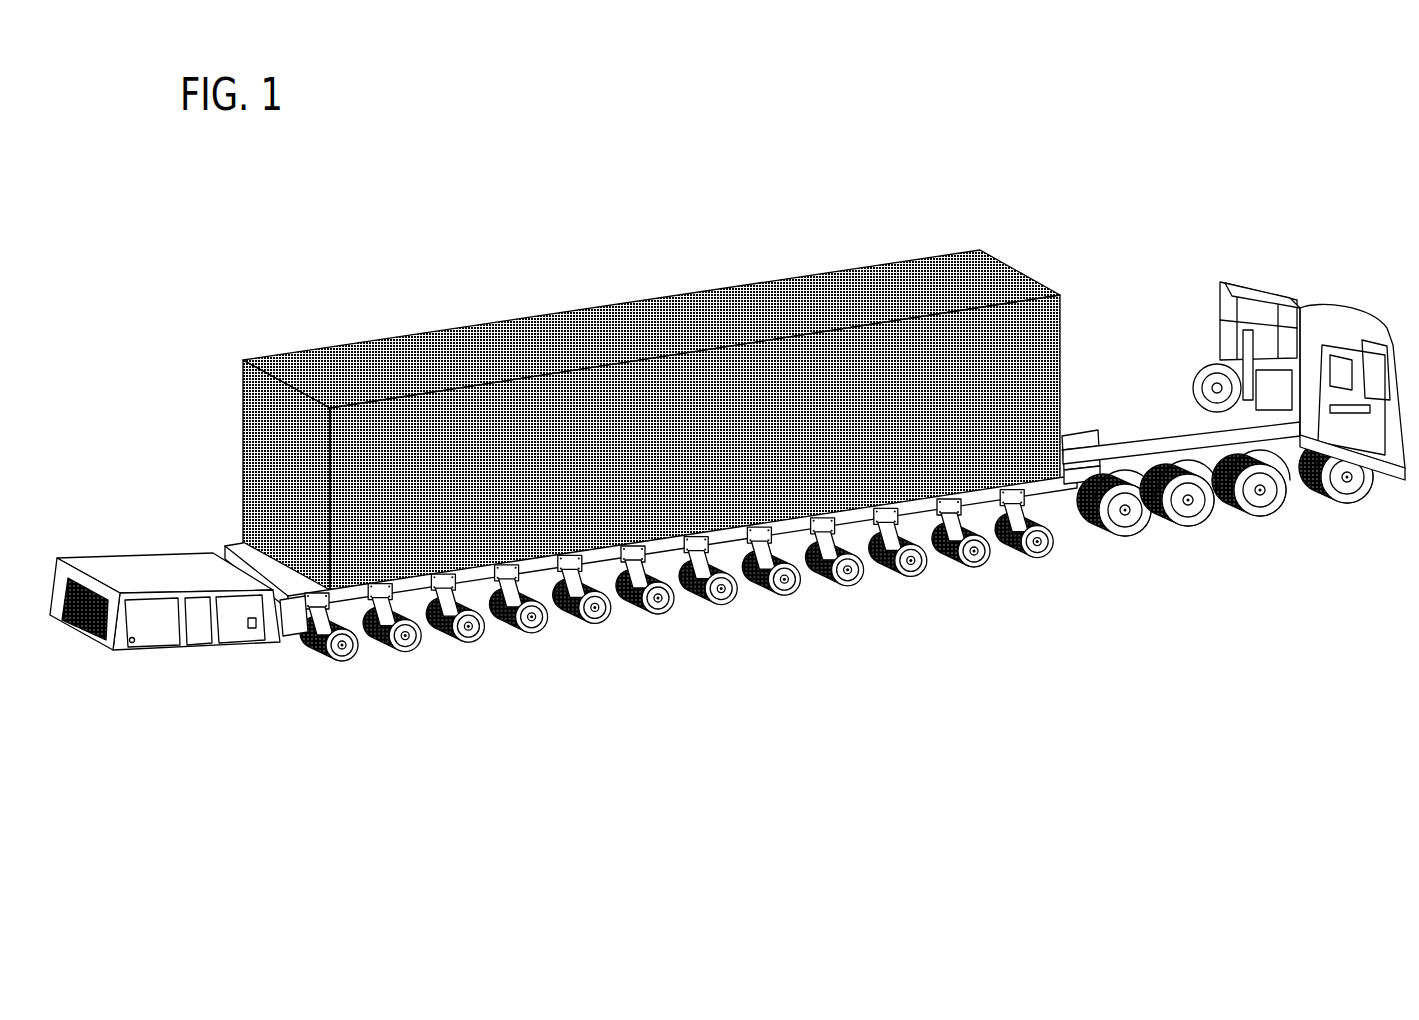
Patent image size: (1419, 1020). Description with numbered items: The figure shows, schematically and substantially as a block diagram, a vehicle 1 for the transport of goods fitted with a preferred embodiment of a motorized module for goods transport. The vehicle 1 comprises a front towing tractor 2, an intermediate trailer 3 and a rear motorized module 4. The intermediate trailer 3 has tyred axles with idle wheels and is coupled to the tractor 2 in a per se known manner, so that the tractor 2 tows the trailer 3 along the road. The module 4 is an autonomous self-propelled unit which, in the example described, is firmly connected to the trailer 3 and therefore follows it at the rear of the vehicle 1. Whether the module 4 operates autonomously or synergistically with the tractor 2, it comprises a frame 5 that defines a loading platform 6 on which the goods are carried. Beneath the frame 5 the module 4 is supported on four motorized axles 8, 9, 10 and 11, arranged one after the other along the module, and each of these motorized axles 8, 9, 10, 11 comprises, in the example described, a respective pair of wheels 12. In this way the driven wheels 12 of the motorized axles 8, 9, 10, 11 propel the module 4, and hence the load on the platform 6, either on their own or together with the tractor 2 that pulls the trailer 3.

The vehicle for the transport of goods 1 is at (533, 196).
The front towing tractor 2 is at (1213, 270).
The intermediate trailer 3 is at (555, 647).
The rear motorized module 4 is at (555, 645).
The frame 5 is at (600, 550).
The loading platform 6 is at (267, 548).
The motorized axle 8 is at (529, 652).
The motorized axle 9 is at (466, 656).
The motorized axle 10 is at (414, 676).
The motorized axle 11 is at (330, 686).
The wheels 12 is at (333, 668).